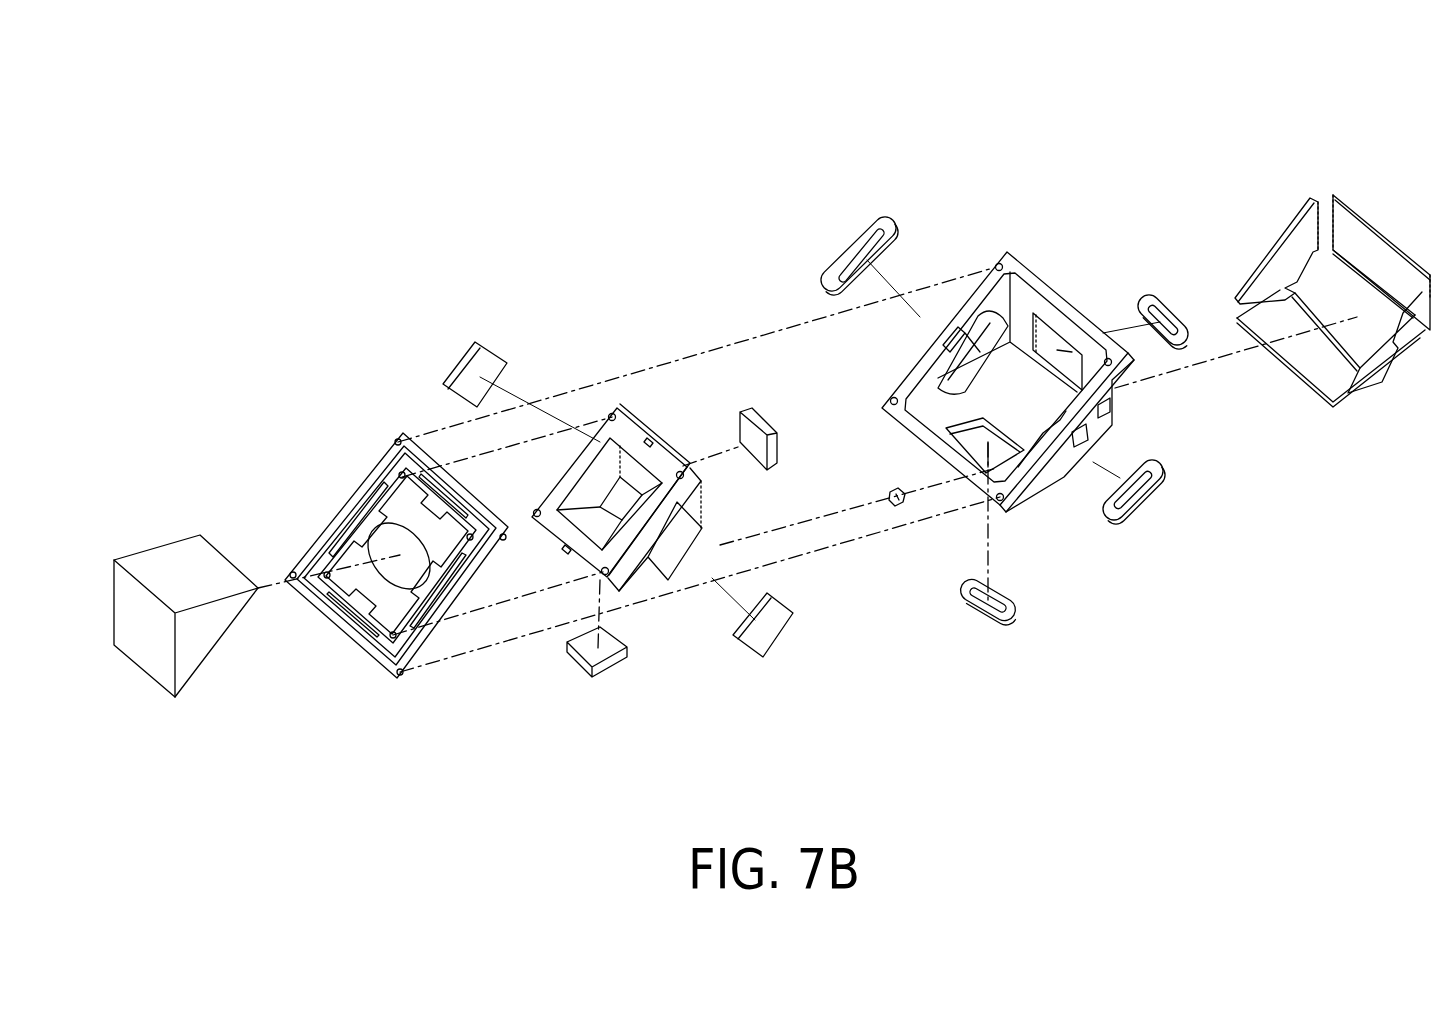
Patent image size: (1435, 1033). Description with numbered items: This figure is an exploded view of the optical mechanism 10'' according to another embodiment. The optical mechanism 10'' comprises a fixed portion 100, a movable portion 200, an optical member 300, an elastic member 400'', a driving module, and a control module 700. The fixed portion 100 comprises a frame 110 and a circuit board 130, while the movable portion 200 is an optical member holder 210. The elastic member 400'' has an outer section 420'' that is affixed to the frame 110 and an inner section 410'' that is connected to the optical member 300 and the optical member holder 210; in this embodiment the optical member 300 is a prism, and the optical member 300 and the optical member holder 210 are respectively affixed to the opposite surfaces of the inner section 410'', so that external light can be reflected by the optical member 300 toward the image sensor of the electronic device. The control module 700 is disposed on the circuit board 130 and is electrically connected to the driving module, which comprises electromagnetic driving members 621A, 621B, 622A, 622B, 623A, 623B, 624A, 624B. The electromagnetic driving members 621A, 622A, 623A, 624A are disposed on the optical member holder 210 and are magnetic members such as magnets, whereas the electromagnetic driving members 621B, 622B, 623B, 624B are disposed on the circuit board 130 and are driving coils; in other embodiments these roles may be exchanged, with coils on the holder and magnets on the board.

The optical mechanism 10'' is at (767, 387).
The fixed portion 100 is at (1323, 449).
The frame 110 is at (1026, 265).
The circuit board 130 is at (1316, 205).
The movable portion 200 is at (643, 418).
The optical member holder 210 is at (596, 432).
The optical member 300 is at (172, 562).
The elastic member 400'' is at (375, 560).
The inner section 410'' is at (358, 555).
The outer section 420'' is at (396, 584).
The electromagnetic driving member 621A is at (468, 355).
The electromagnetic driving member 621B is at (863, 225).
The electromagnetic driving member 622A is at (773, 630).
The electromagnetic driving member 622B is at (1148, 493).
The electromagnetic driving member 623A is at (575, 657).
The electromagnetic driving member 623B is at (970, 607).
The electromagnetic driving member 624A is at (760, 410).
The electromagnetic driving member 624B is at (1167, 303).
The control module 700 is at (886, 497).